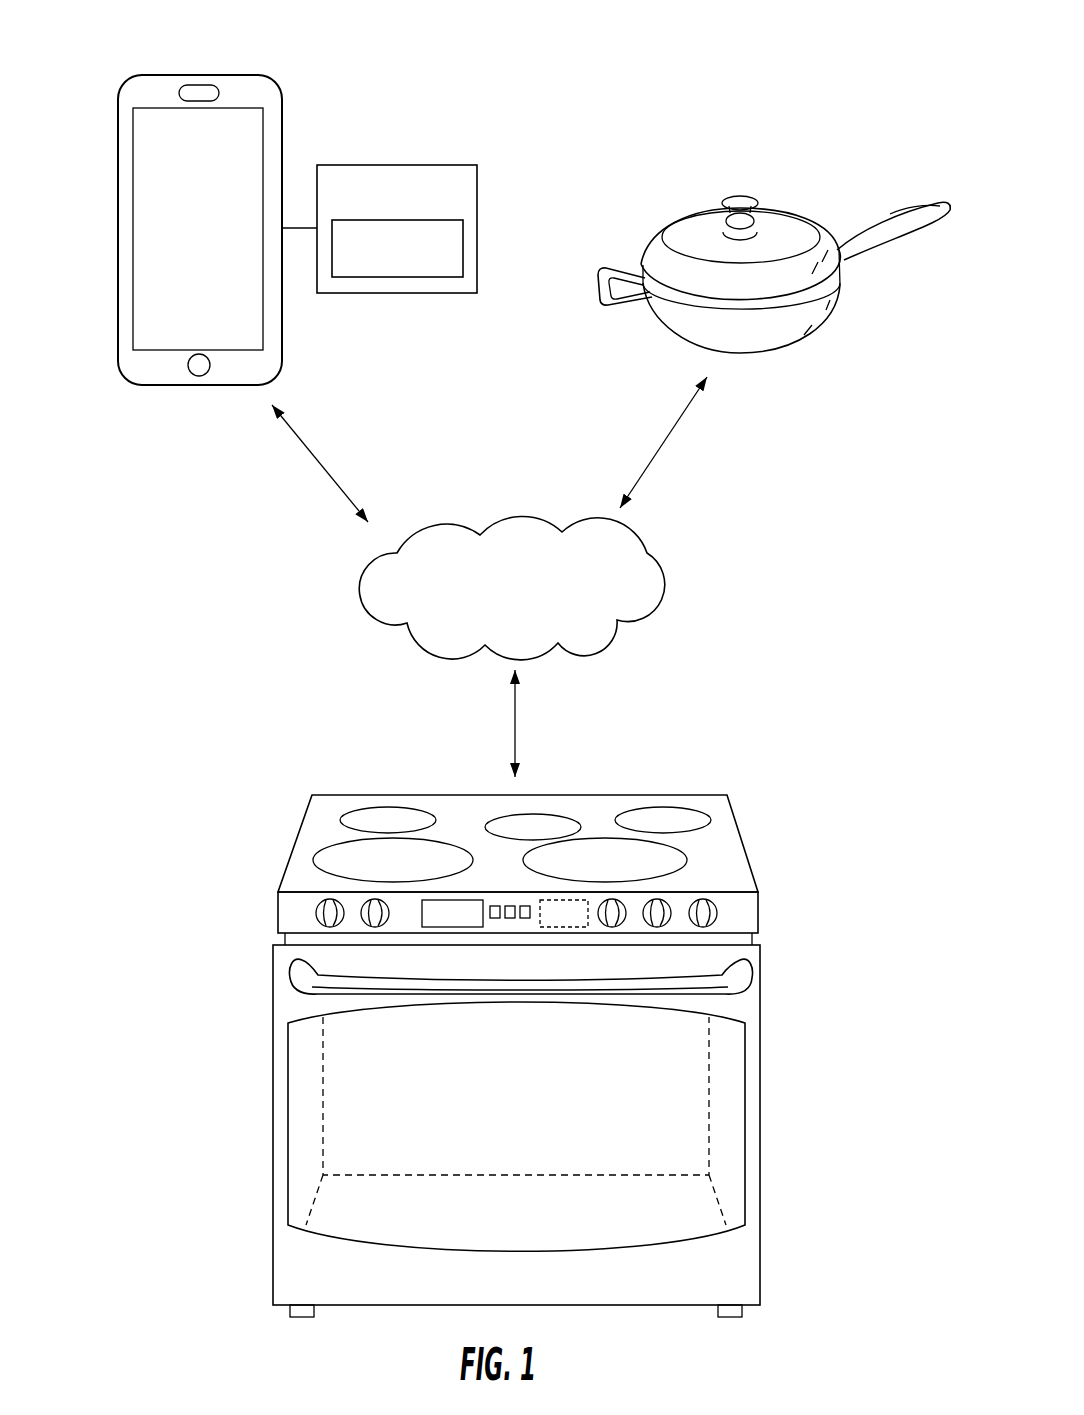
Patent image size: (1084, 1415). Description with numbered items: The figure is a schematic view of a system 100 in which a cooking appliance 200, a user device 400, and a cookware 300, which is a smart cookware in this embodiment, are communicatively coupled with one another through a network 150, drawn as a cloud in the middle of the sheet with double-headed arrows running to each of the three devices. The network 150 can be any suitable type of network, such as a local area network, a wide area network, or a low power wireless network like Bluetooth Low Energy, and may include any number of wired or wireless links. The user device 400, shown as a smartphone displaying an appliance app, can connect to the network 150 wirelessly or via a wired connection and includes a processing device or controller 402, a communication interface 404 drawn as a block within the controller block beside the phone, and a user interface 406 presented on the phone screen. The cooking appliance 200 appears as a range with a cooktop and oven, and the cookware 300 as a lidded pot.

The system 100 is at (571, 70).
The user device 400 is at (104, 120).
The user interface 406 is at (170, 285).
The controller 402 is at (376, 207).
The communication interface 404 is at (376, 263).
The cookware 300 is at (829, 210).
The network 150 is at (497, 617).
The cooking appliance 200 is at (268, 808).